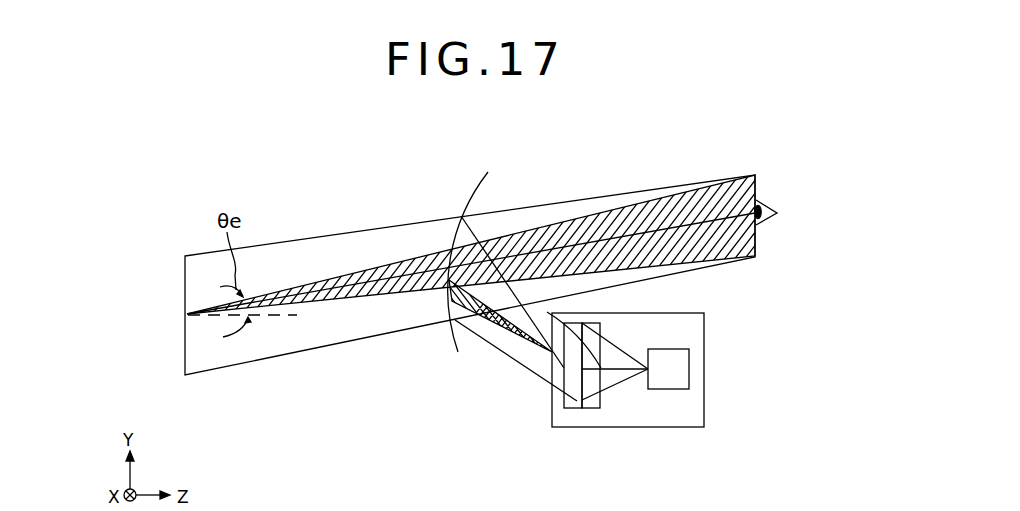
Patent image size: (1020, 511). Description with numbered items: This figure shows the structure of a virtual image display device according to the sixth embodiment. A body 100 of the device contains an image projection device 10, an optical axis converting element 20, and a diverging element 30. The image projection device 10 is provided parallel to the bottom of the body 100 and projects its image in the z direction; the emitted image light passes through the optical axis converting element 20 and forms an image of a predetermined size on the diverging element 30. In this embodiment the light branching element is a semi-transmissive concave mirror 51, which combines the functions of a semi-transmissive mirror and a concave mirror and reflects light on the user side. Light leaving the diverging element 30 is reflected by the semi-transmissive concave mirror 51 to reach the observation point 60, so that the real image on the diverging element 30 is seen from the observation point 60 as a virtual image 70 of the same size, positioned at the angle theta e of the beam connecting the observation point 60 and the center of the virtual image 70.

The image projection device 10 is at (677, 365).
The optical axis converting element 20 is at (593, 401).
The diverging element 30 is at (572, 401).
The semi-transmissive concave mirror 51 is at (480, 190).
The observation point 60 is at (767, 207).
The virtual image 70 is at (185, 262).
The body 100 is at (687, 405).